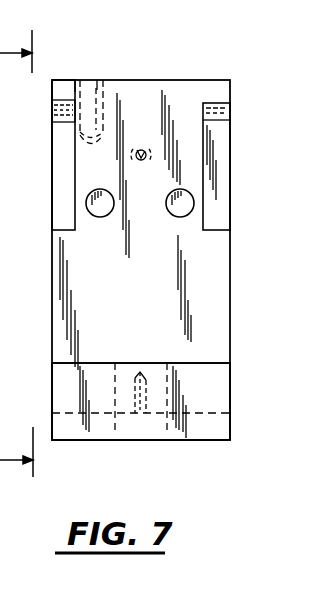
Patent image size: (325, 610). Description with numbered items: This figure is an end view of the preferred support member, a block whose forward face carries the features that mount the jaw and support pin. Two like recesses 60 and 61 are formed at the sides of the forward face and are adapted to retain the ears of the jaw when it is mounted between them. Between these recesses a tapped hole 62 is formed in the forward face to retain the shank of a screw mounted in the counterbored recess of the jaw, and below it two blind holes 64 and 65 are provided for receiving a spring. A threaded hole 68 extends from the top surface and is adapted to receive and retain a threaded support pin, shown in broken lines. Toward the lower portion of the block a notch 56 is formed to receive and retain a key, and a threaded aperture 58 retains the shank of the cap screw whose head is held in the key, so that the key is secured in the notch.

The notch 56 is at (58, 424).
The threaded aperture 58 is at (131, 366).
The recess 60 is at (80, 160).
The recess 61 is at (205, 137).
The tapped hole 62 is at (143, 149).
The blind hole 64 is at (102, 210).
The blind hole 65 is at (180, 214).
The threaded hole 68 is at (97, 78).